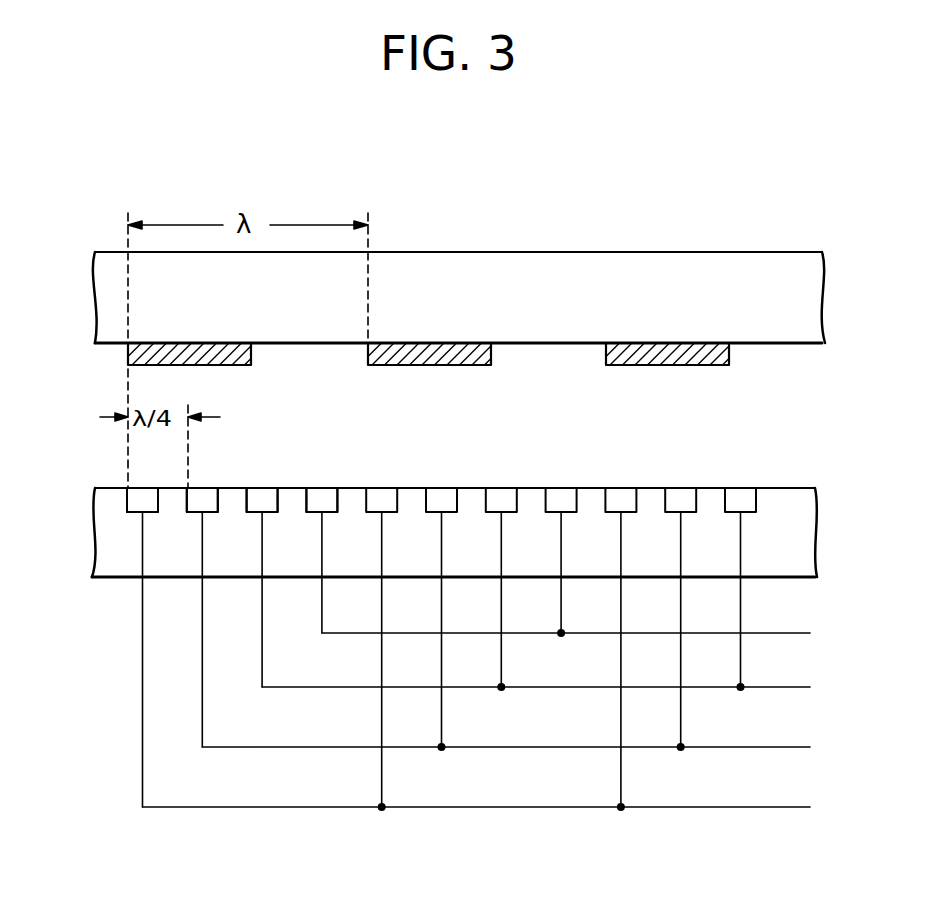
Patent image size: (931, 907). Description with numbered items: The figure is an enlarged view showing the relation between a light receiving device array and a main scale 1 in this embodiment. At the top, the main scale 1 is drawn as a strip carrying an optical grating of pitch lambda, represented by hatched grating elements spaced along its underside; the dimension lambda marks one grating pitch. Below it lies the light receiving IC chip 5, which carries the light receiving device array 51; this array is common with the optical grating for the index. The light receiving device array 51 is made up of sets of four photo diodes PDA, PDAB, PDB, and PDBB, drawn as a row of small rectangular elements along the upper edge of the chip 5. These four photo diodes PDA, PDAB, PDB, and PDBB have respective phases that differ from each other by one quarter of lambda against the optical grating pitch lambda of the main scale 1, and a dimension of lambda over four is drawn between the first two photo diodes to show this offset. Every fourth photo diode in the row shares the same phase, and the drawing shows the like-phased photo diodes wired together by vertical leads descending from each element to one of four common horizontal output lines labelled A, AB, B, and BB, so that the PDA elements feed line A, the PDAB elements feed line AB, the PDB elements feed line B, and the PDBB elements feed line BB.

The main scale 1 is at (660, 238).
The light receiving IC chip 5 is at (446, 629).
The light receiving device array 51 is at (110, 500).
The photo diode PDA is at (147, 500).
The photo diode PDAB is at (205, 500).
The photo diode PDB is at (263, 503).
The photo diode PDBB is at (331, 494).
The output line A is at (489, 809).
The output line AB is at (526, 749).
The output line B is at (548, 689).
The output line BB is at (586, 635).